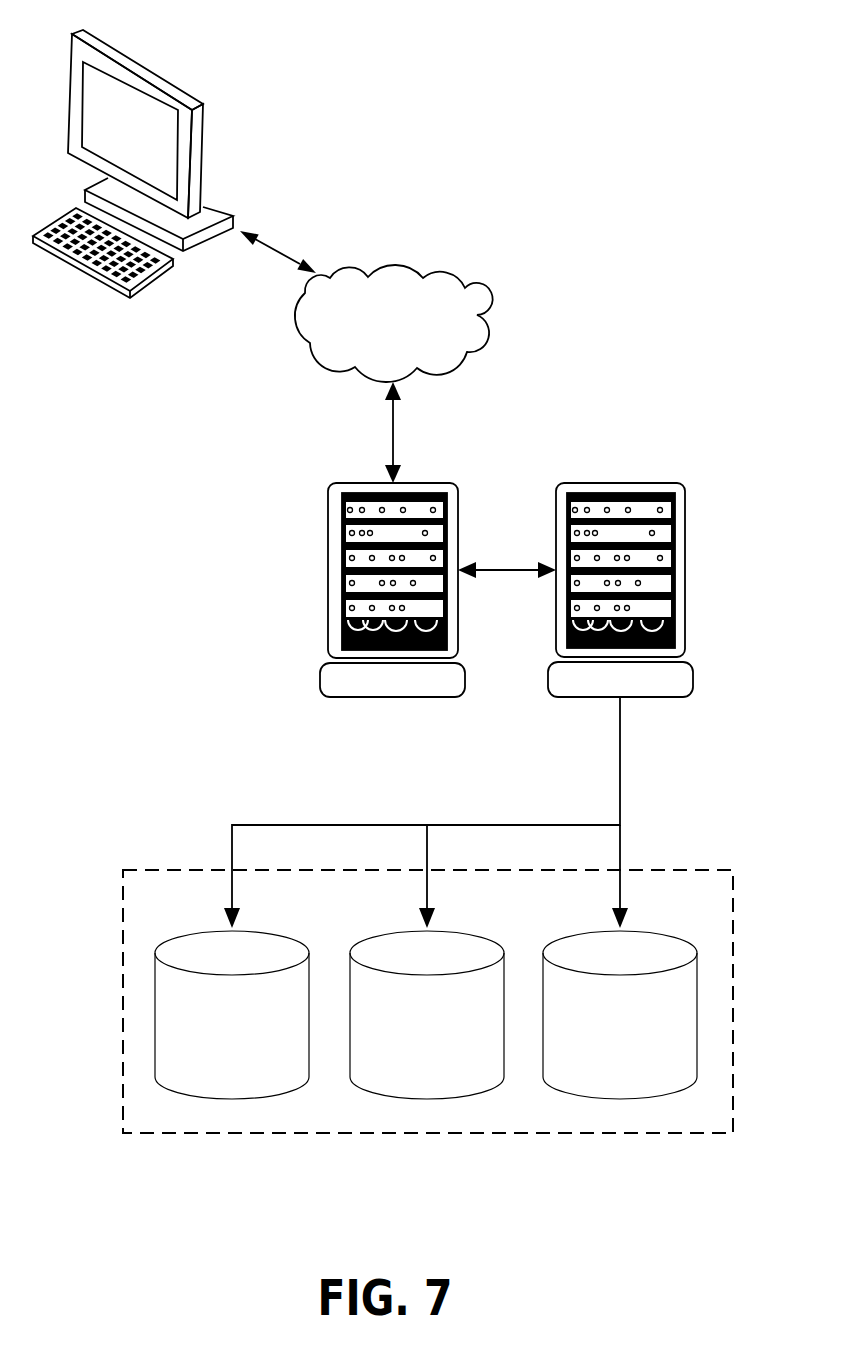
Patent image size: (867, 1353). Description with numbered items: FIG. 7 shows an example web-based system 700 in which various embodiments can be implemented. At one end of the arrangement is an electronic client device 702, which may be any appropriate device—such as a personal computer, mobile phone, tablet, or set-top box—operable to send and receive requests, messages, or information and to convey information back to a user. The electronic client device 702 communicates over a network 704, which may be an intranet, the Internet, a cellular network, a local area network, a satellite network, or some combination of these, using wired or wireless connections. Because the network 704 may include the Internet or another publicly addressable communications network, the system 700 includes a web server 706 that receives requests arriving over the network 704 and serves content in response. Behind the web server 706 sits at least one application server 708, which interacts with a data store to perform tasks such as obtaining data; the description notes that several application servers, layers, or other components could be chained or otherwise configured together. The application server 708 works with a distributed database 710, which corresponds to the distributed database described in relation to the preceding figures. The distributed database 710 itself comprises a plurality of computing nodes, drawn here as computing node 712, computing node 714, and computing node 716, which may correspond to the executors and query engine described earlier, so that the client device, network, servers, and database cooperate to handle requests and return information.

The system 700 is at (677, 305).
The electronic client device 702 is at (153, 68).
The network 704 is at (423, 278).
The web server 706 is at (328, 573).
The application server 708 is at (548, 678).
The distributed database 710 is at (160, 1136).
The computing node 712 is at (232, 1097).
The computing node 714 is at (427, 1097).
The computing node 716 is at (620, 1097).